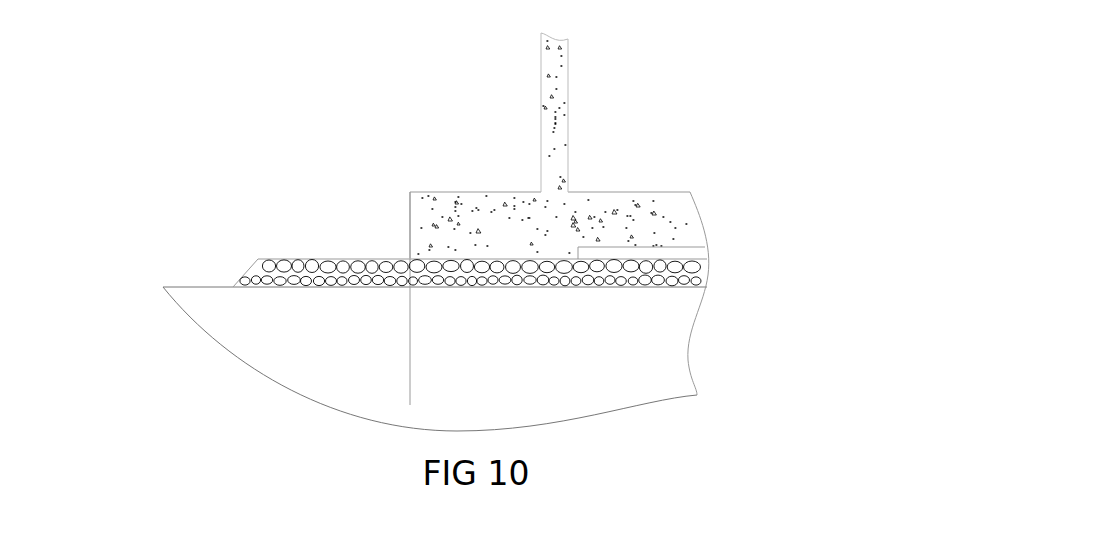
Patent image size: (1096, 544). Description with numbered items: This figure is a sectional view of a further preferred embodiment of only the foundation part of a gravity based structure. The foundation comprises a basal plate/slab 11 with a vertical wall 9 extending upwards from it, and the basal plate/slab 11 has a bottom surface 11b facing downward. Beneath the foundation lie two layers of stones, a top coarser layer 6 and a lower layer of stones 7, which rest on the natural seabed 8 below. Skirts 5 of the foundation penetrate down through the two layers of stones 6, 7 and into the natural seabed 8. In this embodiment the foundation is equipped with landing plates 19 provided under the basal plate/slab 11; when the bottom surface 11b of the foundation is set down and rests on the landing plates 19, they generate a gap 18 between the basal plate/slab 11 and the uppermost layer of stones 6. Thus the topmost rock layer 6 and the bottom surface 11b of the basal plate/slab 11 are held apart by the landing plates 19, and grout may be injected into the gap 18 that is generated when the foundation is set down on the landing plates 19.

The skirt 5 is at (412, 333).
The top coarser layer of stones 6 is at (678, 272).
The layer of stones 7 is at (638, 283).
The natural seabed 8 is at (182, 285).
The vertical wall 9 is at (557, 80).
The basal plate/slab 11 is at (420, 217).
The bottom surface 11b is at (503, 258).
The gap 18 is at (667, 253).
The landing plates 19 is at (632, 246).